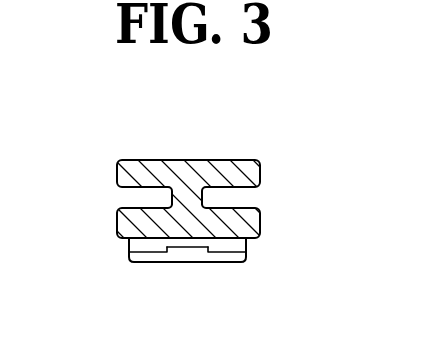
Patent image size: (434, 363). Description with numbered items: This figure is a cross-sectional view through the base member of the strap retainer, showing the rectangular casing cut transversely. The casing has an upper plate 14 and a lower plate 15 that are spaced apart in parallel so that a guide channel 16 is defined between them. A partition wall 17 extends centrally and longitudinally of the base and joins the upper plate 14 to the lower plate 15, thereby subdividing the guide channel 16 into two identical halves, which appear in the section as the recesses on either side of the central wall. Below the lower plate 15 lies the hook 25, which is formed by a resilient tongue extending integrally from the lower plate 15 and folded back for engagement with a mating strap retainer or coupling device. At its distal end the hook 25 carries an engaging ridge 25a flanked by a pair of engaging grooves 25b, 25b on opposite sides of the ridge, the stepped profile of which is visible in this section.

The upper plate 14 is at (127, 223).
The lower plate 15 is at (157, 160).
The guide channel 16 is at (125, 197).
The partition wall 17 is at (202, 190).
The hook 25 is at (248, 247).
The engaging ridge 25a is at (188, 263).
The engaging grooves 25b is at (140, 263).